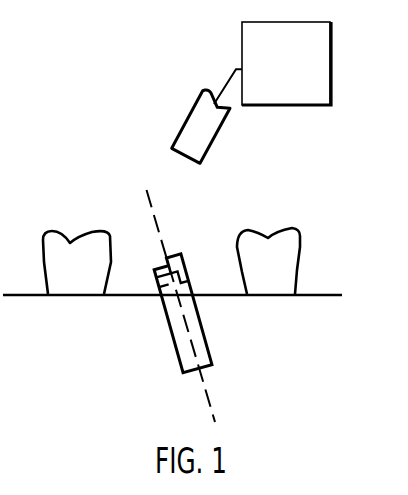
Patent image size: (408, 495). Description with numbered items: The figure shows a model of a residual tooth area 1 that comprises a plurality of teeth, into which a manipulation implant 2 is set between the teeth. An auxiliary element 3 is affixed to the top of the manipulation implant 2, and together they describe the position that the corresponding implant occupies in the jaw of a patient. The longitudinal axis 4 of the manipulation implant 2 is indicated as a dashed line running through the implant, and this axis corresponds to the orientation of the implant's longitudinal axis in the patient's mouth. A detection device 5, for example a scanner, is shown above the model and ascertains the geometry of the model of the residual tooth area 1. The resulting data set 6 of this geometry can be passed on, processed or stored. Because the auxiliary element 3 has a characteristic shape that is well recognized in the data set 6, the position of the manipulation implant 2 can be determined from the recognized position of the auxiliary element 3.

The model of a residual tooth area 1 is at (369, 240).
The manipulation implant 2 is at (203, 347).
The auxiliary element 3 is at (181, 251).
The longitudinal axis 4 is at (207, 389).
The detection device 5 is at (188, 125).
The data set 6 is at (303, 106).